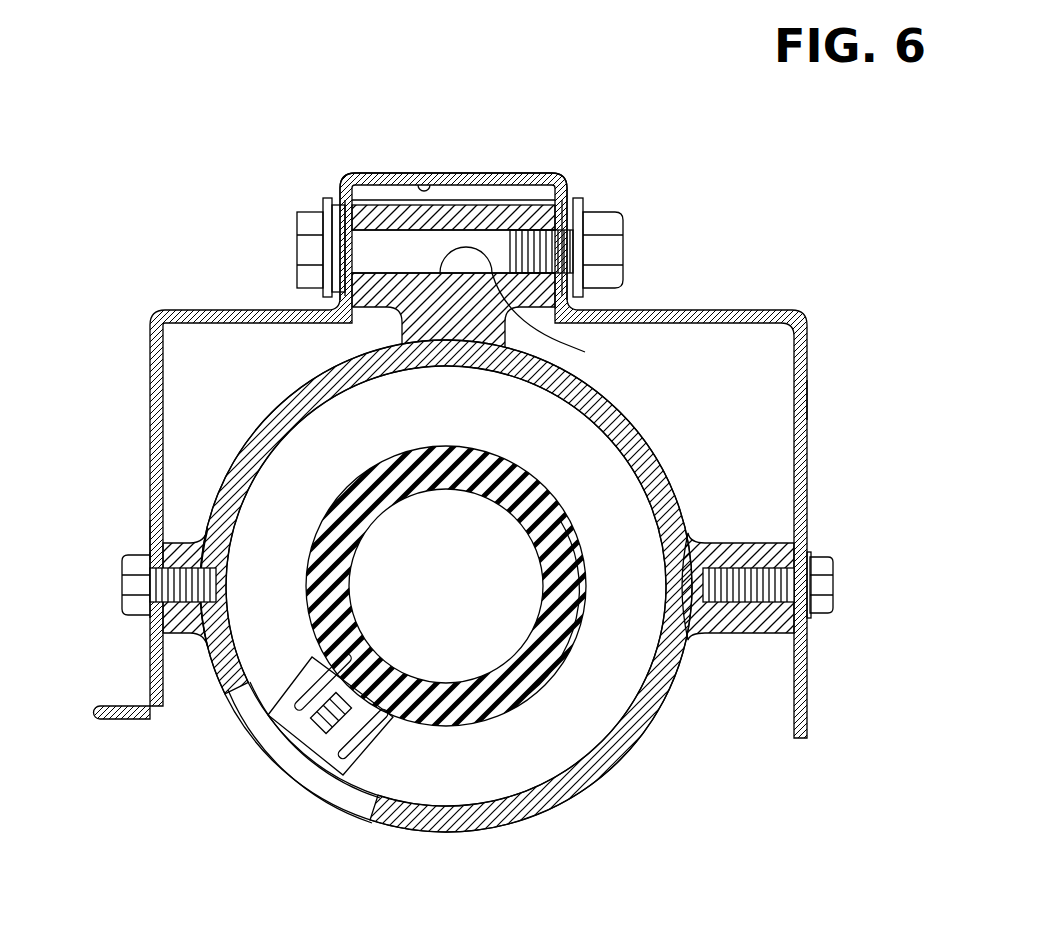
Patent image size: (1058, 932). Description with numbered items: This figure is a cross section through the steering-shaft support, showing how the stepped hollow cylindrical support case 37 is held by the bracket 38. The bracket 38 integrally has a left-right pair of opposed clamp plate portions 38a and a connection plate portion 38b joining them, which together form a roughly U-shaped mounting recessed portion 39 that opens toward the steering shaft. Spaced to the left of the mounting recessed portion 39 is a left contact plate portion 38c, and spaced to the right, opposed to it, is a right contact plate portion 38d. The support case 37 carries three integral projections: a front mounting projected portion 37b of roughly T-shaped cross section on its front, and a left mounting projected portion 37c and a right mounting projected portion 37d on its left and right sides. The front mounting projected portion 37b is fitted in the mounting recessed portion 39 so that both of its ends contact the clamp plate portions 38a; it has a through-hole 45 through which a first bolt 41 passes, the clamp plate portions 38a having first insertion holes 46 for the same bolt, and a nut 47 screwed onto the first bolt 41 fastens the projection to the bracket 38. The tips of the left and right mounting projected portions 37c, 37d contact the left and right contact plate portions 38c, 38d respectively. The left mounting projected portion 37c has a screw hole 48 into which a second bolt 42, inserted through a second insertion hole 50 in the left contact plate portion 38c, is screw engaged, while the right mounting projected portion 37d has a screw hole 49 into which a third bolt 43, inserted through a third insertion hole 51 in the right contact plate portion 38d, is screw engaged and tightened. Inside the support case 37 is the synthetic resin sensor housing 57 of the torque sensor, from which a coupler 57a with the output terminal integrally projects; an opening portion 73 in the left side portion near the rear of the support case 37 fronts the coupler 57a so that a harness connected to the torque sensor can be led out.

The support case 37 is at (614, 408).
The front mounting projected portion 37b is at (380, 173).
The left mounting projected portion 37c is at (180, 525).
The right mounting projected portion 37d is at (745, 543).
The bracket 38 is at (746, 300).
The clamp plate portions 38a is at (345, 200).
The connection plate portion 38b is at (500, 173).
The left contact plate portion 38c is at (150, 518).
The right contact plate portion 38d is at (808, 395).
The mounting recessed portion 39 is at (428, 205).
The first bolt 41 is at (296, 240).
The second bolt 42 is at (122, 585).
The third bolt 43 is at (835, 600).
The through-hole 45 is at (530, 312).
The first insertion holes 46 is at (330, 262).
The nut 47 is at (616, 268).
The screw hole 48 is at (216, 578).
The screw hole 49 is at (733, 602).
The second insertion hole 50 is at (120, 604).
The third insertion hole 51 is at (816, 568).
The sensor housing 57 is at (462, 724).
The coupler 57a is at (303, 742).
The opening portion 73 is at (370, 810).